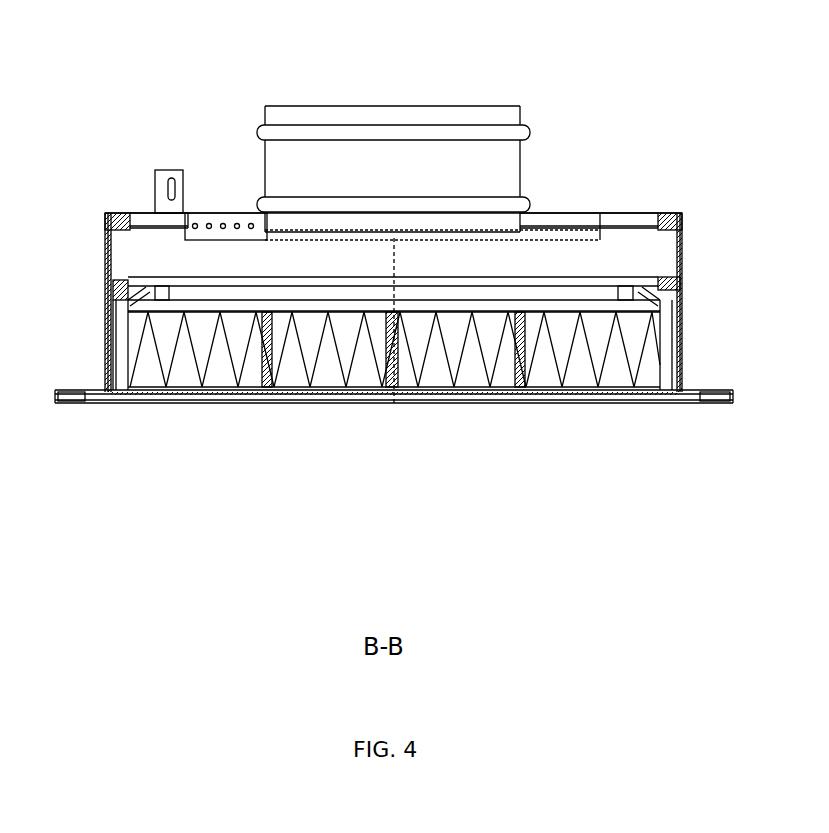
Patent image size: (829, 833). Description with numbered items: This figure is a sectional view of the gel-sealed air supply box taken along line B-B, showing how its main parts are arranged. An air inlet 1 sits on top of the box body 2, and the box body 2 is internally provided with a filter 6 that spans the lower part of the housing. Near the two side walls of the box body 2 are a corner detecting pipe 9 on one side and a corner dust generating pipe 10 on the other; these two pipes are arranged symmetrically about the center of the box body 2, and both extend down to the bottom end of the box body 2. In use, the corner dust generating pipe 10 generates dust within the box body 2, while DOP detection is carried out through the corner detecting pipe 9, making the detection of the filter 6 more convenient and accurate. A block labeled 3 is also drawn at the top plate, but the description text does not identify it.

The air inlet 1 is at (368, 160).
The box body 2 is at (105, 265).
The connector block 3 is at (217, 238).
The filter 6 is at (432, 386).
The corner detecting pipe 9 is at (112, 318).
The corner dust generating pipe 10 is at (680, 305).